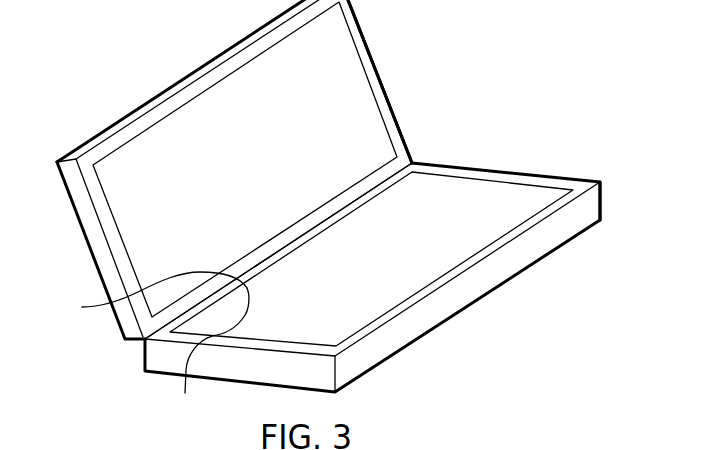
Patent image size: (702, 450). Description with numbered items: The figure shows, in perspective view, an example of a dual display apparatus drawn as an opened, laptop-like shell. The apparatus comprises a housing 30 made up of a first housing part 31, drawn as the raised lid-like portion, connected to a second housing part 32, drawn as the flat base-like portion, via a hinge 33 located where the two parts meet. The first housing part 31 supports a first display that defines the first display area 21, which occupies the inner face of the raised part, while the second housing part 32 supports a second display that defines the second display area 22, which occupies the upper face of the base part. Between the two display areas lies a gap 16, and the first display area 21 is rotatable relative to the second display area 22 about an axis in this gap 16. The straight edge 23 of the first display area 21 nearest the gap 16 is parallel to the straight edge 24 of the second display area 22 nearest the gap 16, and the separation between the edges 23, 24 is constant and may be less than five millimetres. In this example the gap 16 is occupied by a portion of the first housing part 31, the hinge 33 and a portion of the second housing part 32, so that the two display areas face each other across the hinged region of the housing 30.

The gap 16 is at (143, 355).
The first display area 21 is at (271, 168).
The second display area 22 is at (398, 265).
The straight edge of the first display area 23 is at (147, 298).
The straight edge of the second display area 24 is at (211, 356).
The housing 30 is at (75, 213).
The first housing part 31 is at (377, 72).
The second housing part 32 is at (552, 176).
The hinge 33 is at (412, 163).